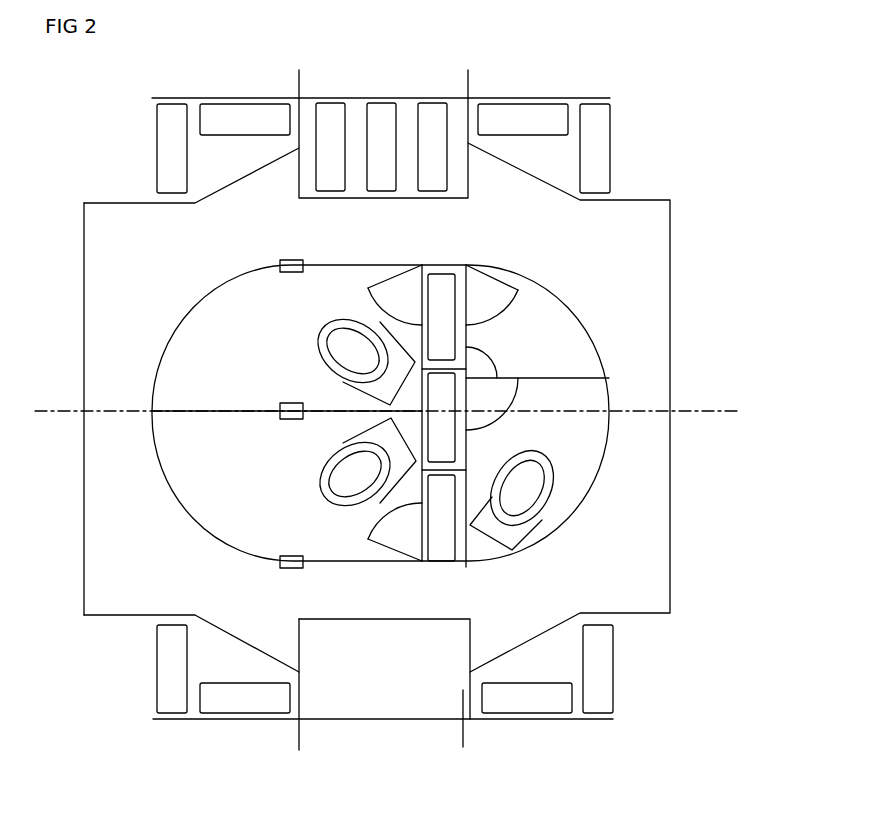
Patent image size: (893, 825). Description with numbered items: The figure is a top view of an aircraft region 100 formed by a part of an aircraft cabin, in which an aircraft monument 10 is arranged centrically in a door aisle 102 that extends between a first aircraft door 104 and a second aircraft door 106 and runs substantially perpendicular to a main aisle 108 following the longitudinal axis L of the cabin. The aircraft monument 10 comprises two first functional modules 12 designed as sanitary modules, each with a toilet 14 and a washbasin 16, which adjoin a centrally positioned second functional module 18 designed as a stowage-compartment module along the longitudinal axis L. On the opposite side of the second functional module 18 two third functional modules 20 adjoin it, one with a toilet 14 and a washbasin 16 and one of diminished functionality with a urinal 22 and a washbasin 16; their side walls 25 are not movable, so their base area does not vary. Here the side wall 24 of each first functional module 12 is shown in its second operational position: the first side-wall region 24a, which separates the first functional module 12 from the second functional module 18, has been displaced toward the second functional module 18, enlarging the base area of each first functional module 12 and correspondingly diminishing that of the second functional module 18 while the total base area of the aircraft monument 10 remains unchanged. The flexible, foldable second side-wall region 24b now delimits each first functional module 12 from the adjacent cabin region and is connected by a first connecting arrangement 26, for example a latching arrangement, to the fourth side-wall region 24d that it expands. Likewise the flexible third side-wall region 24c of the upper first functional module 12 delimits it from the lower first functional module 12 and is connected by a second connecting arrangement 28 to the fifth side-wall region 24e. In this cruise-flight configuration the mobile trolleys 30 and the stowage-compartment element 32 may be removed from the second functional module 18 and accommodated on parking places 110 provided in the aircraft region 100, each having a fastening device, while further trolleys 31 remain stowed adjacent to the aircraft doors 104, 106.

The aircraft region 100 is at (692, 98).
The aircraft monument 10 is at (648, 328).
The first functional module 12 is at (166, 364).
The toilet 14 is at (350, 342).
The washbasin 16 is at (400, 268).
The second functional module 18 is at (466, 262).
The third functional module 20 is at (560, 303).
The urinal 22 is at (488, 367).
The side wall 24 is at (214, 274).
The first side-wall region 24a is at (443, 265).
The second side-wall region 24b is at (352, 264).
The third side-wall region 24c is at (325, 406).
The fourth side-wall region 24d is at (170, 336).
The fifth side-wall region 24e is at (245, 408).
The side wall of third functional module 25 is at (588, 318).
The first connecting arrangement 26 is at (291, 260).
The second connecting arrangement 28 is at (295, 402).
The trolley 30 is at (330, 107).
The further trolley 31 is at (175, 117).
The stowage-compartment element 32 is at (350, 712).
The door aisle 102 is at (531, 190).
The first aircraft door 104 is at (436, 96).
The second aircraft door 106 is at (415, 722).
The main aisle 108 is at (672, 530).
The parking place 110 is at (357, 107).
The longitudinal axis L is at (722, 408).